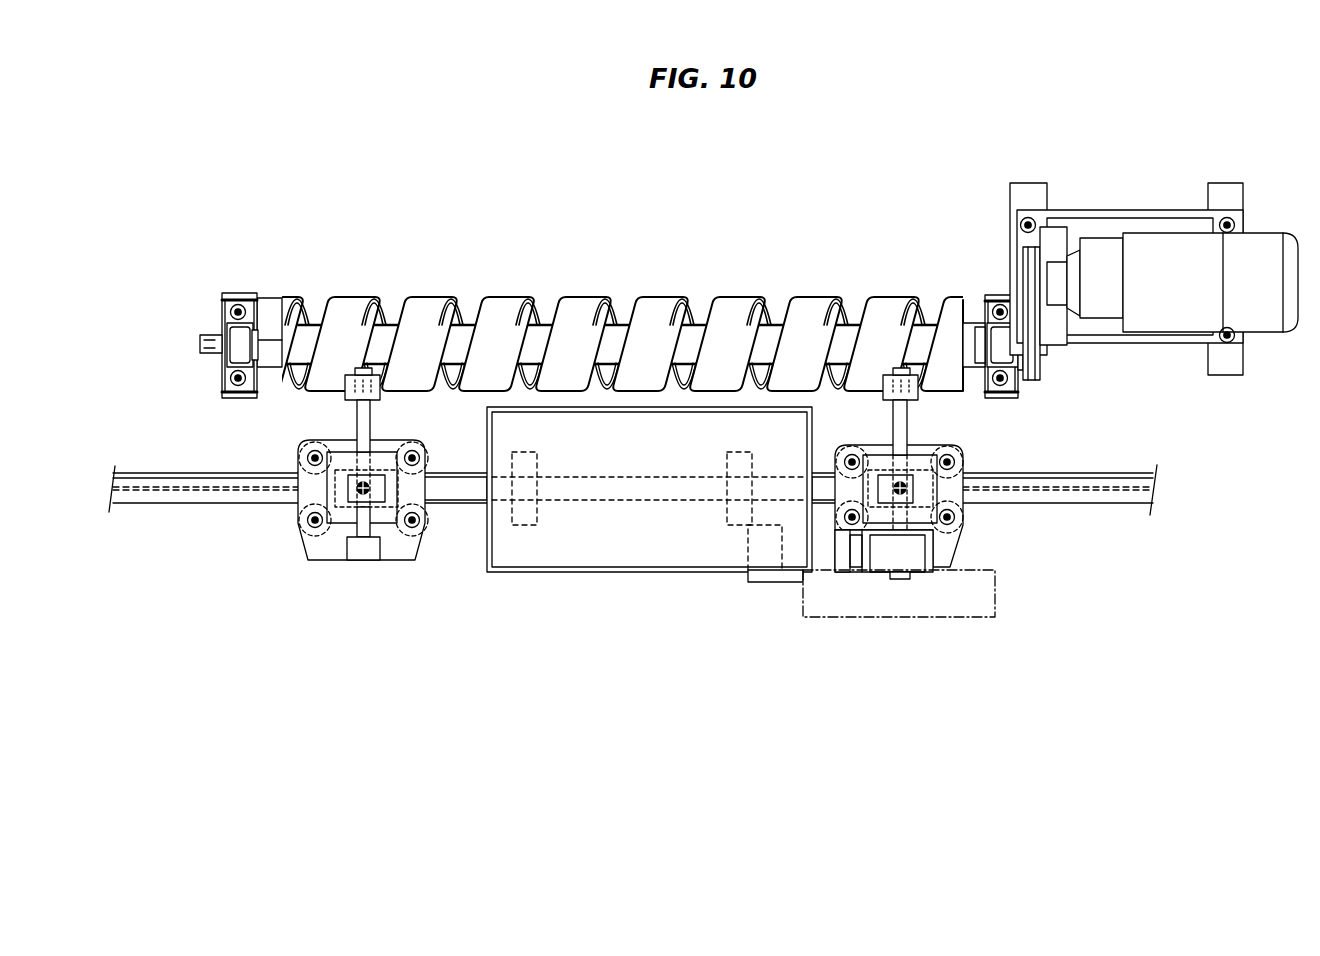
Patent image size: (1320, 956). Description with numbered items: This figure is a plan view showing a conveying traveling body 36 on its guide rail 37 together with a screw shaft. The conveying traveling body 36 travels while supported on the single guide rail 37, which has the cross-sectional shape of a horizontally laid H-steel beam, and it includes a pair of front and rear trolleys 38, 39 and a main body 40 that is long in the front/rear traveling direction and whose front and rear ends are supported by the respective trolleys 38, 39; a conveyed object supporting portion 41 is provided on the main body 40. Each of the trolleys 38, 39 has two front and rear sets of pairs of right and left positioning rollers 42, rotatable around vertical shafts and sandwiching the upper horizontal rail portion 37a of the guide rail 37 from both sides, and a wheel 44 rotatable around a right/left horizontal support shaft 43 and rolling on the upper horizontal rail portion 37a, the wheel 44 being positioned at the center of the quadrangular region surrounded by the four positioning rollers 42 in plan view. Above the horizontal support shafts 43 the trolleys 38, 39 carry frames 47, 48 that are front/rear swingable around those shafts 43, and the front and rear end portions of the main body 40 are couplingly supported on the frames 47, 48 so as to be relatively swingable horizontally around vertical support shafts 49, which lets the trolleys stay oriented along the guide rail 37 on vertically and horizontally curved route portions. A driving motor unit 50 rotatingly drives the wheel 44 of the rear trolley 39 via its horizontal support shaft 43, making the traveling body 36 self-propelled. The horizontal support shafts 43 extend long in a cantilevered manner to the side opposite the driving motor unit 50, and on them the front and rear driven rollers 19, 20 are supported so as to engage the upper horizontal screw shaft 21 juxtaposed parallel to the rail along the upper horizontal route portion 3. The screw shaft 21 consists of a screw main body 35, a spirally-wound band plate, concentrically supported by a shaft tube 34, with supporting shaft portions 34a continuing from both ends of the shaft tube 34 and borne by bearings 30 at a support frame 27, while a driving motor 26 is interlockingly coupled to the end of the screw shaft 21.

The upper horizontal route portion 3 is at (1098, 512).
The driven roller 19 is at (348, 368).
The driven roller 20 is at (890, 372).
The upper horizontal screw shaft 21 is at (662, 292).
The driving motor 26 is at (1160, 258).
The support frame 27 is at (265, 300).
The bearing 30 is at (237, 350).
The shaft tube 34 is at (527, 338).
The supporting shaft portion 34a is at (212, 340).
The screw main body 35 is at (737, 300).
The conveying traveling body 36 is at (567, 578).
The guide rail 37 is at (165, 505).
The upper horizontal rail portion 37a is at (215, 498).
The trolley 38 is at (362, 572).
The trolley 39 is at (968, 540).
The main body 40 is at (473, 502).
The conveyed object supporting portion 41 is at (650, 553).
The positioning roller 42 is at (298, 462).
The right/left horizontal support shaft 43 is at (367, 433).
The wheel 44 is at (357, 500).
The frame 47 is at (380, 522).
The frame 48 is at (912, 574).
The vertical support shaft 49 is at (310, 452).
The driving motor unit 50 is at (820, 594).